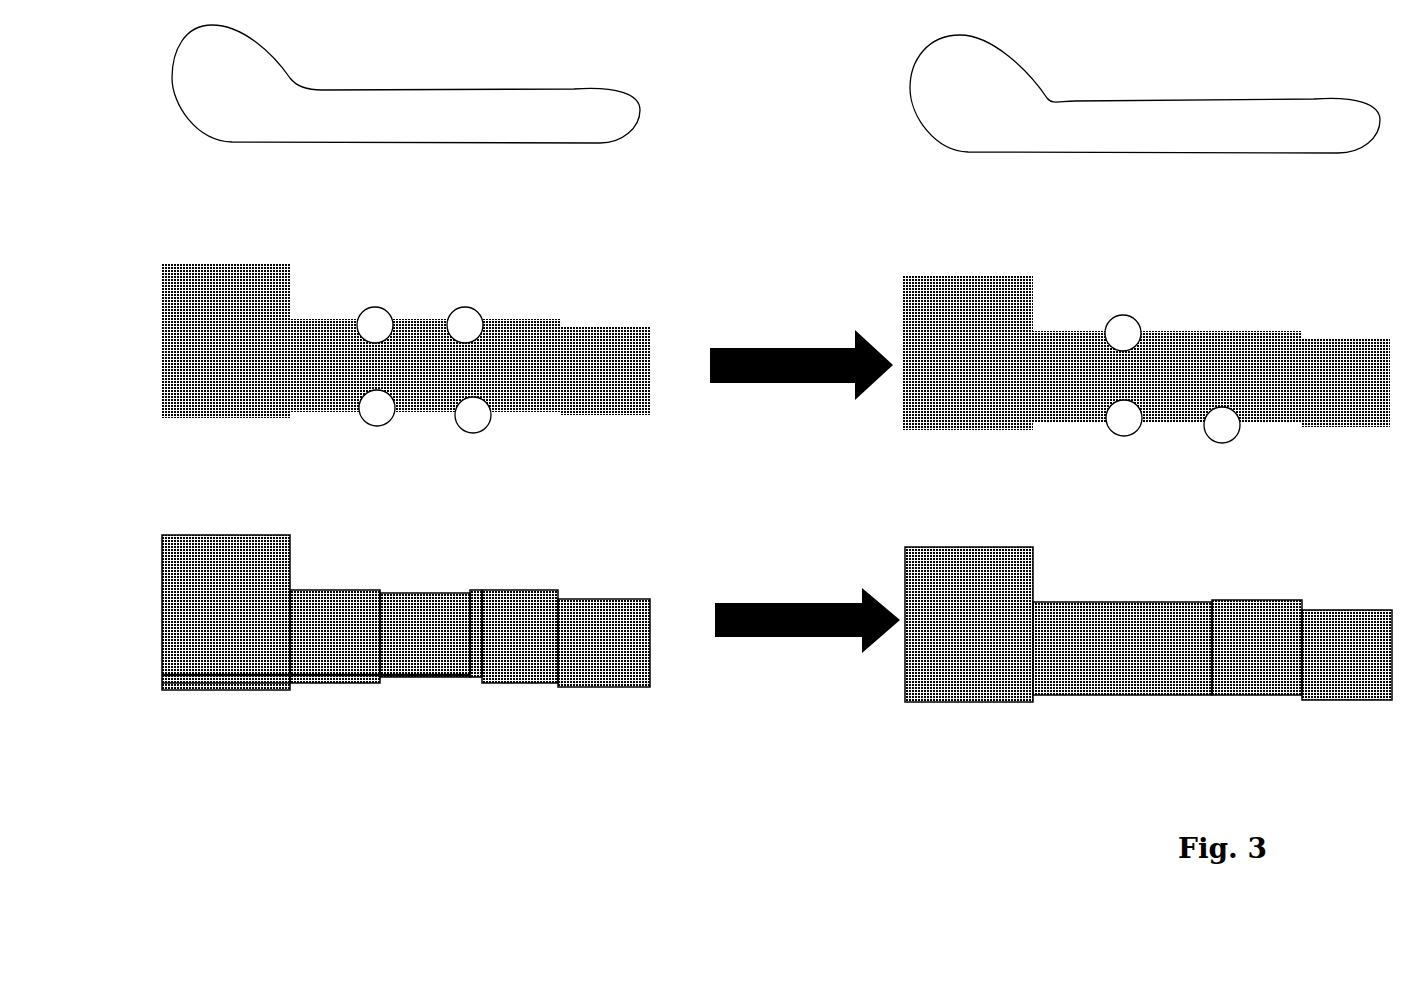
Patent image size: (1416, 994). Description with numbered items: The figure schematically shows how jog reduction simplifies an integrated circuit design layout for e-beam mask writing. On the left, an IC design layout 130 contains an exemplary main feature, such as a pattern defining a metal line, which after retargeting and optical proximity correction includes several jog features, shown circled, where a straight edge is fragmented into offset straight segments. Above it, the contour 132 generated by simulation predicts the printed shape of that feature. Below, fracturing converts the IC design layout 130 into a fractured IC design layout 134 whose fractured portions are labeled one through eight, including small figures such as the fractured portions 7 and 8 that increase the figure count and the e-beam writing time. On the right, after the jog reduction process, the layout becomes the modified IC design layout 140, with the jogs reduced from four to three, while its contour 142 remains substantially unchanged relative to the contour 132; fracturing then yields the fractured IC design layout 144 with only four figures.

The IC design layout 130 is at (160, 346).
The contour 132 is at (384, 87).
The fractured IC design layout 134 is at (359, 649).
The modified IC design layout 140 is at (898, 313).
The contour 142 is at (1054, 97).
The fractured IC design layout 144 is at (901, 572).
The fractured portion 7 is at (162, 680).
The fractured portion 8 is at (224, 692).